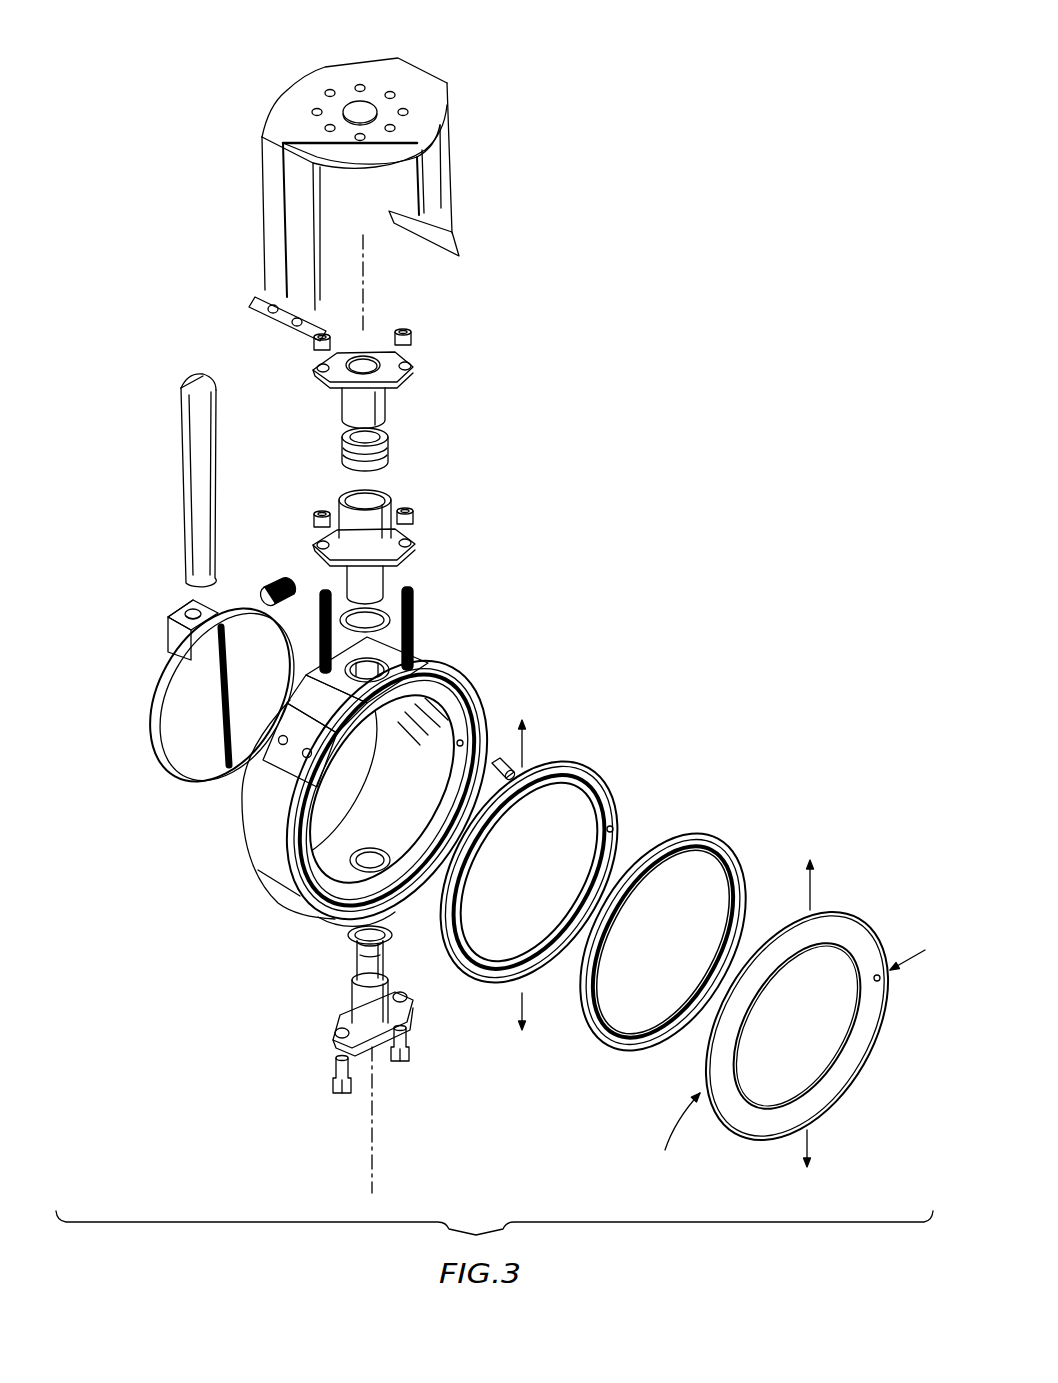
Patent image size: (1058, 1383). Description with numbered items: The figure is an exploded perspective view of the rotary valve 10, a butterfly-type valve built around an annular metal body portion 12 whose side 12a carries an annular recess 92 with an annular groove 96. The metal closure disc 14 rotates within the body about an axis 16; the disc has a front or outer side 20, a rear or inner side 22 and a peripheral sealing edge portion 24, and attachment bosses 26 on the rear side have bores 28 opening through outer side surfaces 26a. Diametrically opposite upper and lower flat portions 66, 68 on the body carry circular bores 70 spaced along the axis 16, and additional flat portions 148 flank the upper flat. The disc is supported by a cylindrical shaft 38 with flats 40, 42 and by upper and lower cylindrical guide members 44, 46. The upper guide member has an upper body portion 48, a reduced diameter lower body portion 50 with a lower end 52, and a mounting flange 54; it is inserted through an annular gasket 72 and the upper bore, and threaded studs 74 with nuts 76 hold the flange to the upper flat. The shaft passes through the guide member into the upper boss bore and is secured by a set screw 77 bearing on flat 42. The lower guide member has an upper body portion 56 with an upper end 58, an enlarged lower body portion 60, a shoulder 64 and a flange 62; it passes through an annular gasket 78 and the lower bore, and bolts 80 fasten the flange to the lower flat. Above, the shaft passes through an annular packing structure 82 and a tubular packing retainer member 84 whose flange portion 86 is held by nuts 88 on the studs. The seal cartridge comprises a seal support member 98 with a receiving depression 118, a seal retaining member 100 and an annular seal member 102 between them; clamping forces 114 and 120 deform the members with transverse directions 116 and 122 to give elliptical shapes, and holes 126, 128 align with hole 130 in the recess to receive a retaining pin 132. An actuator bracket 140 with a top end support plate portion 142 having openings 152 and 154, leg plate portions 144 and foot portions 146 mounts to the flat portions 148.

The rotary valve 10 is at (548, 560).
The annular metal body portion 12 is at (265, 840).
The side of the valve body 12a is at (315, 916).
The metal closure disc 14 is at (166, 778).
The axis 16 is at (365, 250).
The front or outer side 20 is at (214, 737).
The rear or inner side 22 is at (156, 705).
The peripheral sealing edge portion 24 is at (160, 735).
The attachment bosses 26 is at (170, 642).
The outer side surfaces 26a is at (178, 608).
The bores 28 is at (185, 612).
The cylindrical shaft 38 is at (190, 474).
The flat 40 is at (208, 392).
The flat 42 is at (218, 575).
The upper cylindrical guide member 44 is at (402, 496).
The lower cylindrical guide member 46 is at (348, 997).
The upper body portion 48 is at (373, 540).
The reduced diameter lower body portion 50 is at (372, 575).
The lower end 52 is at (390, 622).
The elongated transverse mounting flange 54 is at (415, 547).
The cylindrical upper body portion 56 is at (363, 960).
The upper end 58 is at (385, 965).
The enlarged diameter cylindrical lower body portion 60 is at (375, 1007).
The elongated transverse mounting flange 62 is at (330, 1040).
The annular shoulder 64 is at (360, 972).
The upper flat portion 66 is at (370, 692).
The lower flat portion 68 is at (395, 906).
The circular bores 70 is at (303, 693).
The annular gasket 72 is at (322, 618).
The threaded studs 74 is at (320, 640).
The nuts 76 is at (318, 516).
The set screw 77 is at (280, 582).
The annular gasket 78 is at (350, 935).
The bolts 80 is at (408, 1063).
The annular packing structure 82 is at (388, 452).
The tubular packing retainer member 84 is at (380, 400).
The transverse flange portion 86 is at (415, 368).
The nuts 88 is at (318, 345).
The annular recess 92 is at (458, 776).
The annular groove 96 is at (440, 830).
The seal support member 98 is at (598, 768).
The seal retaining member 100 is at (878, 935).
The annular seal member 102 is at (725, 845).
The clamping forces 114 is at (630, 822).
The directions 116 is at (522, 745).
The receiving depression 118 is at (610, 800).
The clamping forces 120 is at (925, 950).
The directions 122 is at (810, 888).
The hole 126 is at (610, 828).
The hole 128 is at (875, 980).
The hole 130 is at (455, 746).
The retaining pin 132 is at (510, 794).
The actuator bracket 140 is at (472, 124).
The top end support plate portion 142 is at (322, 78).
The leg plate portions 144 is at (275, 200).
The foot portions 146 is at (285, 305).
The flat portions 148 is at (262, 803).
The central opening 152 is at (362, 105).
The openings 154 is at (405, 110).